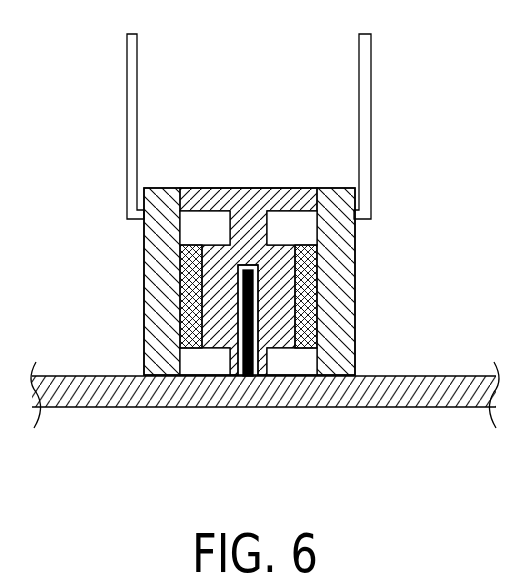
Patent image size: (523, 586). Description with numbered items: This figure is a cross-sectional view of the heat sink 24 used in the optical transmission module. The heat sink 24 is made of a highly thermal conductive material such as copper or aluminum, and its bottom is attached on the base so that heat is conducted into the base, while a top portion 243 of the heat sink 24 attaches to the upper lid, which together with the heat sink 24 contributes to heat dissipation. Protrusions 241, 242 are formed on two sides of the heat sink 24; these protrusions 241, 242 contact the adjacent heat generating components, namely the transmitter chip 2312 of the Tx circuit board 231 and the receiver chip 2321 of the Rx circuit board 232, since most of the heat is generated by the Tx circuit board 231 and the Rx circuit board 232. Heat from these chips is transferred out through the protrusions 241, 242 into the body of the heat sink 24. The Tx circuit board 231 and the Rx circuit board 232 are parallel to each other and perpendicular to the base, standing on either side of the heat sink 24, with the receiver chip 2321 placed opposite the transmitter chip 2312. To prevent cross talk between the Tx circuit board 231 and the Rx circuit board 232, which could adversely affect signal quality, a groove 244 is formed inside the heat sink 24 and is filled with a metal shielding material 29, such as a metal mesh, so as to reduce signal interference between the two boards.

The heat sink 24 is at (250, 190).
The protrusion 241 is at (215, 243).
The top portion 243 is at (296, 196).
The groove 244 is at (258, 277).
The protrusion 242 is at (268, 350).
The Tx circuit board 231 is at (162, 242).
The Rx circuit board 232 is at (330, 347).
The transmitter chip 2312 is at (185, 296).
The receiver chip 2321 is at (307, 313).
The metal shielding material 29 is at (240, 376).